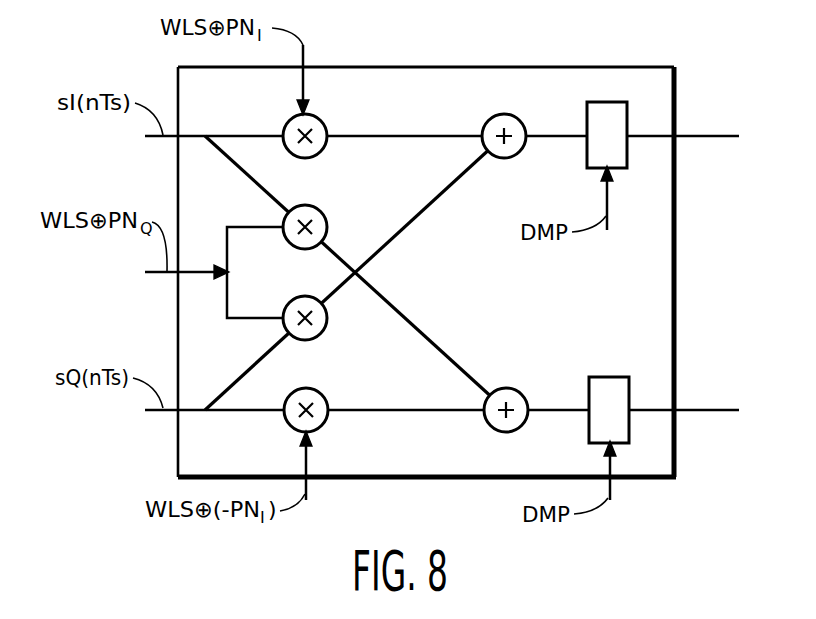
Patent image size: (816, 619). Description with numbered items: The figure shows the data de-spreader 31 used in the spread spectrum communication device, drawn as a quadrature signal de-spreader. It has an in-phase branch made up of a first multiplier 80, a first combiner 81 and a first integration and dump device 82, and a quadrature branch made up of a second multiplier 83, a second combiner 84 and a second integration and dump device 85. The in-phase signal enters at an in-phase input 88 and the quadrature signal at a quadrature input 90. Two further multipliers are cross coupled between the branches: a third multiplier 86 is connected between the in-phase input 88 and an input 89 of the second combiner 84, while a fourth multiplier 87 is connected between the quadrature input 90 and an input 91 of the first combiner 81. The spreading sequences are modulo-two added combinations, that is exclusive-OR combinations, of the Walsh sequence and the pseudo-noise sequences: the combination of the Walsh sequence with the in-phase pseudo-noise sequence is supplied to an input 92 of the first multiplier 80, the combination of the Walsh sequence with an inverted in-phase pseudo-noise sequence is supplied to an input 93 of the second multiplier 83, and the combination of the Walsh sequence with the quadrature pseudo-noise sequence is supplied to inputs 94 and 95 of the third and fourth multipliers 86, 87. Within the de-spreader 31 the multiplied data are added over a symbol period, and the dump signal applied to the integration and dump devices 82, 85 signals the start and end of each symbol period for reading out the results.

The data de-spreader 31 is at (618, 68).
The first multiplier 80 is at (311, 157).
The first combiner 81 is at (521, 123).
The first integration and dump device 82 is at (622, 110).
The second multiplier 83 is at (319, 393).
The second combiner 84 is at (518, 428).
The second integration and dump device 85 is at (592, 380).
The third multiplier 86 is at (326, 226).
The fourth multiplier 87 is at (298, 300).
The in-phase input 88 is at (178, 140).
The input of the second combiner 89 is at (489, 390).
The quadrature input 90 is at (180, 413).
The input of the first combiner 91 is at (494, 157).
The input of the first multiplier 92 is at (295, 116).
The input of the second multiplier 93 is at (313, 431).
The input of the third multiplier 94 is at (286, 221).
The input of the fourth multiplier 95 is at (288, 331).